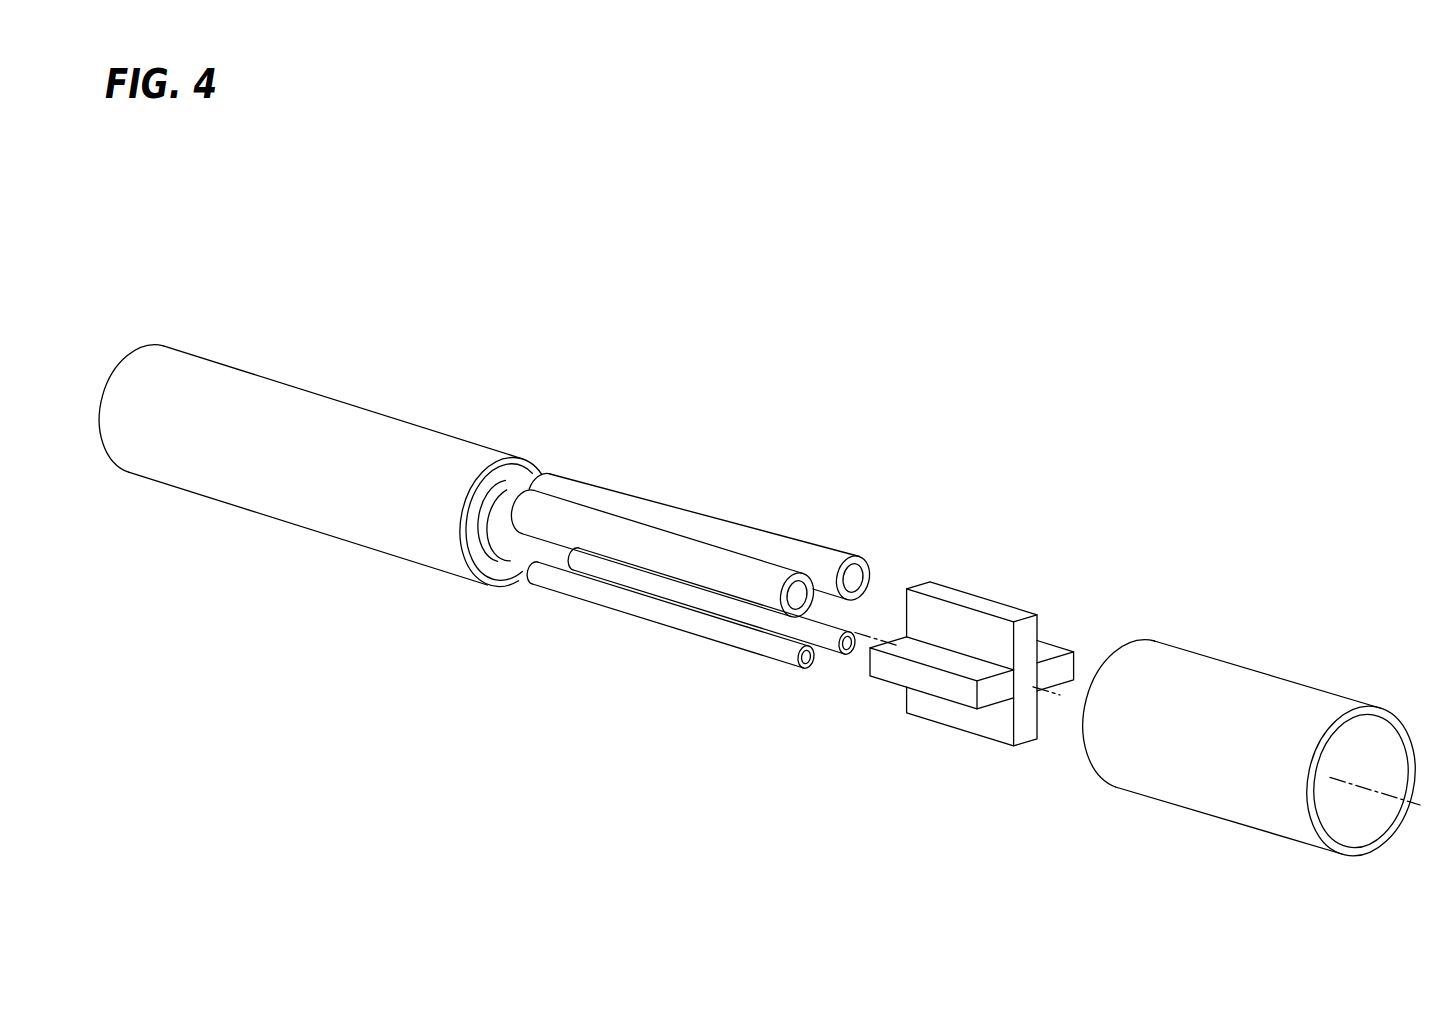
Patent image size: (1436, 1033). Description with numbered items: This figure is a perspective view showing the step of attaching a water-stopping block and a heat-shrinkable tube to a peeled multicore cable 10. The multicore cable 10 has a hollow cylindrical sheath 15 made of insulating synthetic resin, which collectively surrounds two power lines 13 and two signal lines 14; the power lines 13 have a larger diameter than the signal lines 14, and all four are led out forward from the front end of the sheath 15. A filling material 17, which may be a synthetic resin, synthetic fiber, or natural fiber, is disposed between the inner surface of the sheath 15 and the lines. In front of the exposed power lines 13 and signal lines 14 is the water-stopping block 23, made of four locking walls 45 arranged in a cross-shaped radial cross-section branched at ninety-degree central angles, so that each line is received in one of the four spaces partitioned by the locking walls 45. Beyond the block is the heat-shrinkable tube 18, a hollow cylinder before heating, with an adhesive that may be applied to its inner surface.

The multicore cable 10 is at (717, 238).
The sheath 15 is at (367, 410).
The filling material 17 is at (513, 477).
The power lines 13 is at (618, 502).
The signal lines 14 is at (687, 597).
The locking walls 45 is at (1023, 728).
The water-stopping block 23 is at (925, 707).
The heat-shrinkable tube 18 is at (1173, 670).